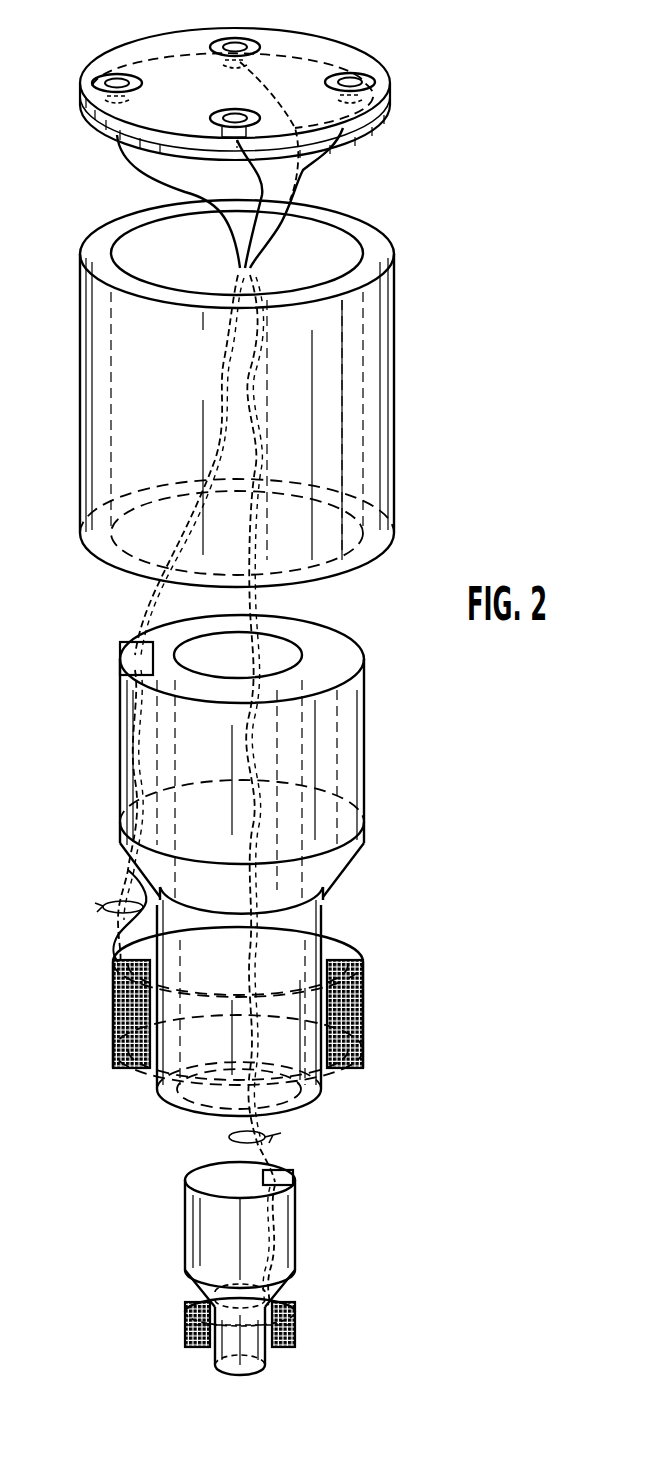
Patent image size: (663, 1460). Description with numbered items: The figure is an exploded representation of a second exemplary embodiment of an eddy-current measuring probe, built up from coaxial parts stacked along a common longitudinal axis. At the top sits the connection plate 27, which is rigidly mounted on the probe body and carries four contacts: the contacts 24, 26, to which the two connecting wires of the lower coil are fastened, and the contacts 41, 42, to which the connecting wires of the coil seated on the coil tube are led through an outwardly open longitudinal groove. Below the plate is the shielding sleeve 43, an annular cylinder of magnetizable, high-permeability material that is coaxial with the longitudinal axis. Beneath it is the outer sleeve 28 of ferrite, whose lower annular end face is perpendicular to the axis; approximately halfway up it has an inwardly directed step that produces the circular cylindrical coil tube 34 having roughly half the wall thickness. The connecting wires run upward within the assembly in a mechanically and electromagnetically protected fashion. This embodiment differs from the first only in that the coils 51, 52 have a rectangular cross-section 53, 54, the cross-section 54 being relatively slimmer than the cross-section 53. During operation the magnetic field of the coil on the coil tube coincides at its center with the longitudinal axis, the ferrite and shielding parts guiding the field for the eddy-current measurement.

The contact 24 is at (216, 110).
The contact 26 is at (92, 78).
The connection plate 27 is at (362, 128).
The outer sleeve 28 is at (327, 763).
The coil tube 34 is at (322, 1095).
The contact 41 is at (362, 78).
The contact 42 is at (262, 44).
The shielding sleeve 43 is at (372, 443).
The coil 51 is at (296, 1312).
The coil 52 is at (333, 947).
The rectangular cross-section 53 is at (185, 1322).
The rectangular cross-section 54 is at (113, 990).